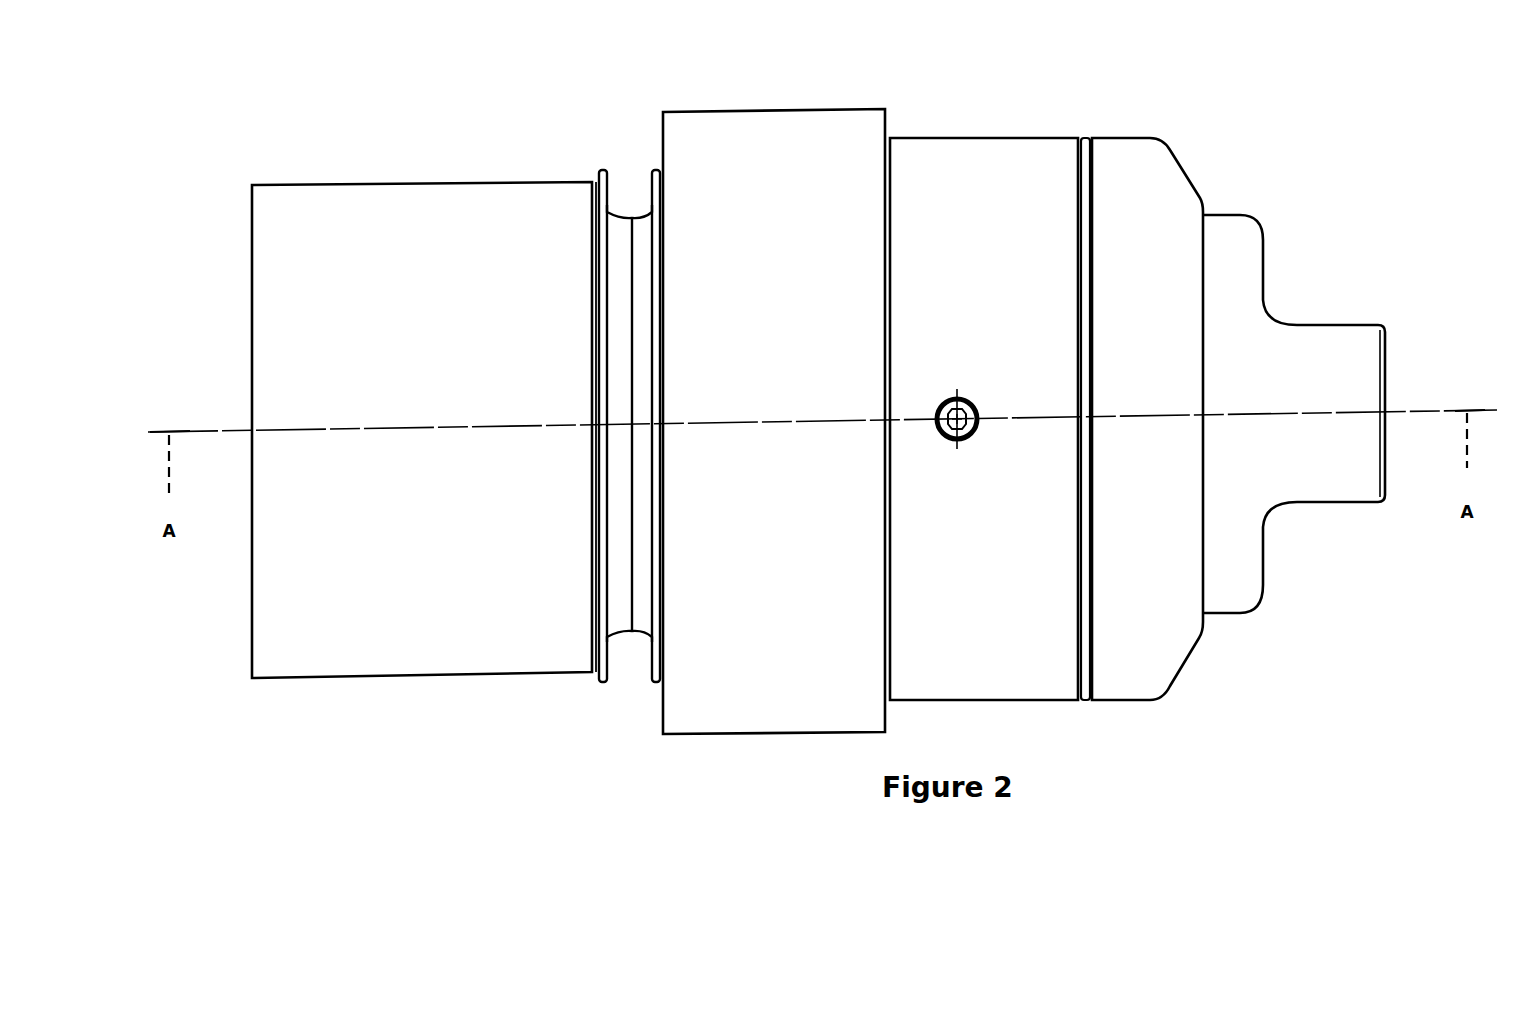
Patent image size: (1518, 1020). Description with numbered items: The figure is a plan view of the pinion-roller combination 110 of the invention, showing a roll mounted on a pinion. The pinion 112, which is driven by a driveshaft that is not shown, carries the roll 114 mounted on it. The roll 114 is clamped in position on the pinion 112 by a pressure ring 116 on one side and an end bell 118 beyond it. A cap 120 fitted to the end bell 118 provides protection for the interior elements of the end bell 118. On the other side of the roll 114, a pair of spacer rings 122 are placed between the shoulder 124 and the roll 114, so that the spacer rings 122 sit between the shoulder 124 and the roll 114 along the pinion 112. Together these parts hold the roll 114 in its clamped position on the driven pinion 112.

The pinion-roller combination 110 is at (1207, 767).
The pinion 112 is at (357, 182).
The roll 114 is at (767, 112).
The pressure ring 116 is at (967, 138).
The end bell 118 is at (1143, 133).
The cap 120 is at (1263, 258).
The spacer rings 122 is at (648, 168).
The shoulder 124 is at (607, 648).